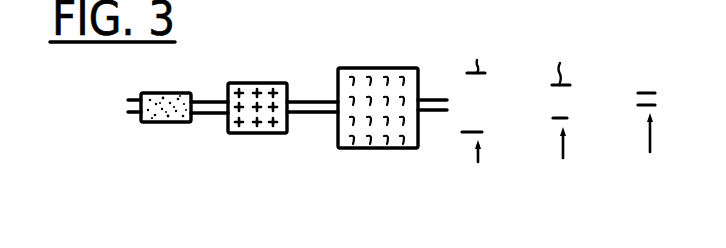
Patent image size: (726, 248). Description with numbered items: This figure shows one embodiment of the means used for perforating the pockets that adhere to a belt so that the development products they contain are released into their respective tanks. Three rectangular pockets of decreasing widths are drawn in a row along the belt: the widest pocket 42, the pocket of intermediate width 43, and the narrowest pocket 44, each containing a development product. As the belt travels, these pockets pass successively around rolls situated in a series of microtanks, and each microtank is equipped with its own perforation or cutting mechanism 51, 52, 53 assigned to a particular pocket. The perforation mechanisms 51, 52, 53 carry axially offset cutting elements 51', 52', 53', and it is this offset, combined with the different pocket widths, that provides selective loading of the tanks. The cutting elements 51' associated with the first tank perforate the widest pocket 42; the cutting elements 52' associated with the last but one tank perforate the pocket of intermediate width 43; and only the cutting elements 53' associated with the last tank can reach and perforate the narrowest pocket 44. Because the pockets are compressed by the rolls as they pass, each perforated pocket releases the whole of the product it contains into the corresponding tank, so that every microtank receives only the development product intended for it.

The widest pocket 42 is at (395, 140).
The pocket of intermediate width 43 is at (262, 135).
The narrowest pocket 44 is at (170, 123).
The perforation mechanism 51 is at (487, 168).
The cutting elements 51' is at (489, 81).
The perforation mechanism 52 is at (569, 161).
The cutting elements 52' is at (582, 82).
The perforation mechanism 53 is at (658, 153).
The cutting elements 53' is at (672, 81).